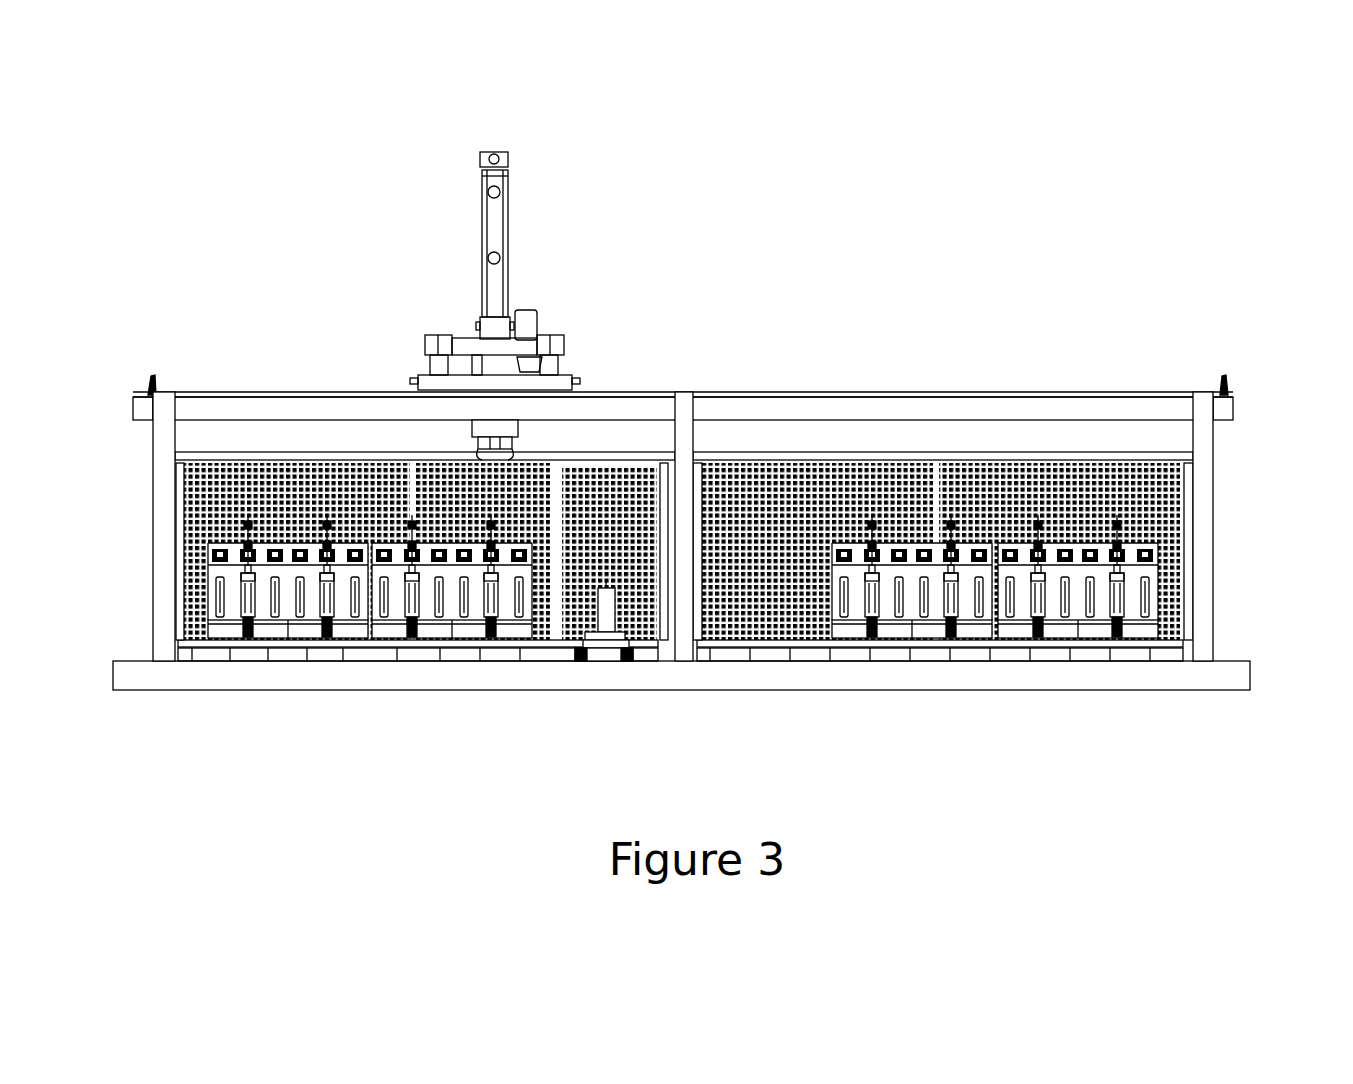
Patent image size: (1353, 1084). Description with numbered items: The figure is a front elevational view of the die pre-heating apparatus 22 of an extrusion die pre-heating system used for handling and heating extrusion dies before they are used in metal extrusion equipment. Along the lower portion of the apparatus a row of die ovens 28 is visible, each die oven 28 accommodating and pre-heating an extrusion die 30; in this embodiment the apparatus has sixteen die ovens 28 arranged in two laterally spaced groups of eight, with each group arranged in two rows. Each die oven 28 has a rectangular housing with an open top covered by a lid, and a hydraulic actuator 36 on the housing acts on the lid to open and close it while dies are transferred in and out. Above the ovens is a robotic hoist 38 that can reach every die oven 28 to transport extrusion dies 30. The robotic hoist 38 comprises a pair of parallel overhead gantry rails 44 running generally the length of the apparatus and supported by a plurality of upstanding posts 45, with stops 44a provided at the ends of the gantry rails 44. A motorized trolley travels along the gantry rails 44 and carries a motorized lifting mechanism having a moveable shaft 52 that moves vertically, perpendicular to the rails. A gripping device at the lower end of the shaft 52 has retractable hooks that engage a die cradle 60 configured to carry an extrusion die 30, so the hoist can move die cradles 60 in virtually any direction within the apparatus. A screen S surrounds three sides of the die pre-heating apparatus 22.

The die pre-heating apparatus 22 is at (708, 452).
The die oven 28 is at (912, 605).
The extrusion die 30 is at (603, 620).
The hydraulic actuator 36 is at (262, 600).
The robotic hoist 38 is at (498, 306).
The gantry rails 44 is at (940, 392).
The stops 44a is at (150, 378).
The upstanding posts 45 is at (690, 440).
The moveable shaft 52 is at (490, 285).
The die cradle 60 is at (607, 648).
The screen S is at (1182, 515).